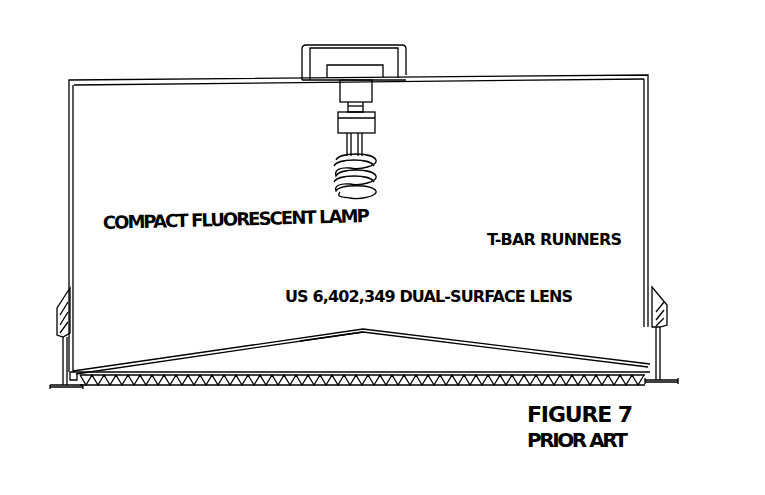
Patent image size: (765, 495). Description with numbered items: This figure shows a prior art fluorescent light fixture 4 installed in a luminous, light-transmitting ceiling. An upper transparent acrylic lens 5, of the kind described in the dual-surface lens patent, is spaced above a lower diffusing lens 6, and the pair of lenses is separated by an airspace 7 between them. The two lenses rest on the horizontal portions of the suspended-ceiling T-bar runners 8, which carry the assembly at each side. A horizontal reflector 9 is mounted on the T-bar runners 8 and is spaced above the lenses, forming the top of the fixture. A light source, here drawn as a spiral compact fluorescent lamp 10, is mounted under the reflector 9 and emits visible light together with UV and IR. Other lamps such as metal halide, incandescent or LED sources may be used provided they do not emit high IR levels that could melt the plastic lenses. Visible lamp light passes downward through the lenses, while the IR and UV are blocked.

The fluorescent light fixture 4 is at (470, 66).
The upper transparent acrylic lens 5 is at (211, 353).
The lower diffusing lens 6 is at (243, 390).
The airspace 7 is at (303, 357).
The suspended-ceiling T-bar runners 8 is at (657, 367).
The horizontal reflector 9 is at (188, 86).
The spiral compact fluorescent lamp 10 is at (334, 167).